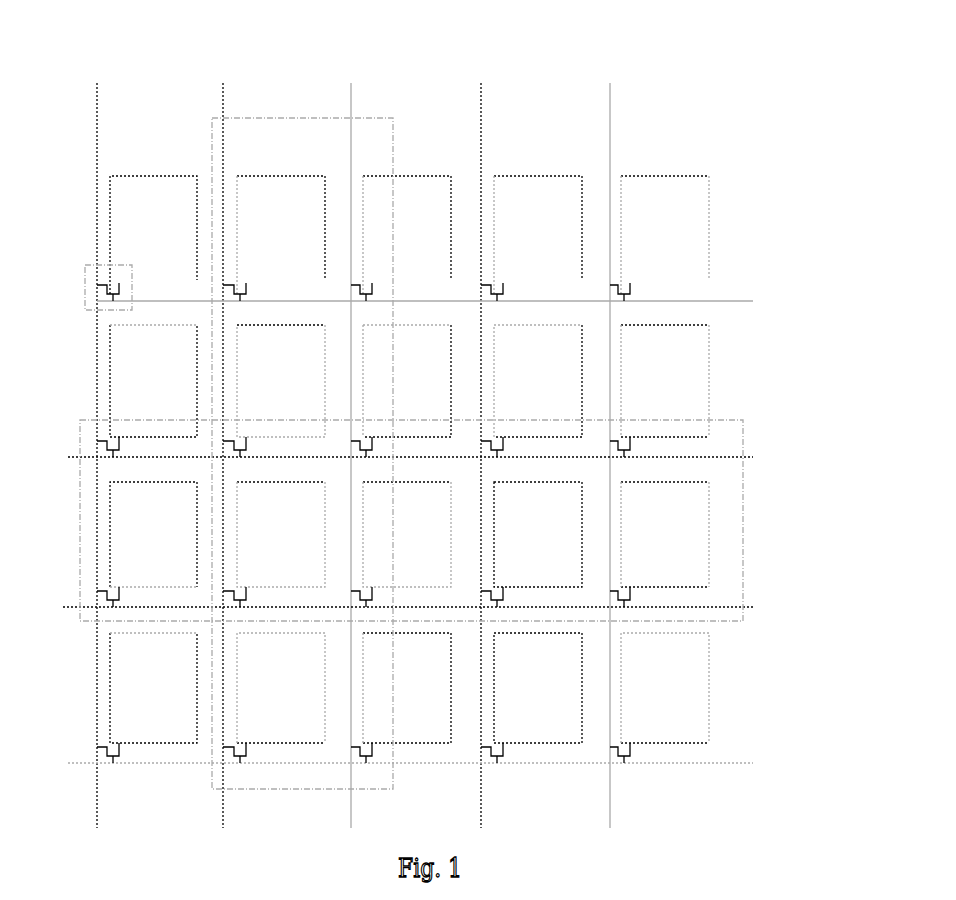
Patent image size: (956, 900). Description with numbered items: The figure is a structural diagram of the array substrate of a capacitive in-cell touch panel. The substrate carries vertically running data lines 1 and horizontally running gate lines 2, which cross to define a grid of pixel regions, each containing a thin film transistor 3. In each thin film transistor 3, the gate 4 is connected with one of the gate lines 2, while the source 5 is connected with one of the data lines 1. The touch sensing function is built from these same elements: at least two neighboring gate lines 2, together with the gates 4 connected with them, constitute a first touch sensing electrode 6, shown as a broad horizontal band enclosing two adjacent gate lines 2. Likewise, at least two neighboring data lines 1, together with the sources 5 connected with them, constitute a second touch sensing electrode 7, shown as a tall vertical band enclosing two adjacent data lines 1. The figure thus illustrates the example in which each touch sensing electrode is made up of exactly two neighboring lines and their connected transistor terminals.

The data line 1 is at (98, 240).
The gate line 2 is at (88, 137).
The thin film transistor 3 is at (87, 307).
The gate 4 is at (107, 300).
The source 5 is at (108, 288).
The first touch sensing electrode 6 is at (743, 549).
The second touch sensing electrode 7 is at (273, 118).